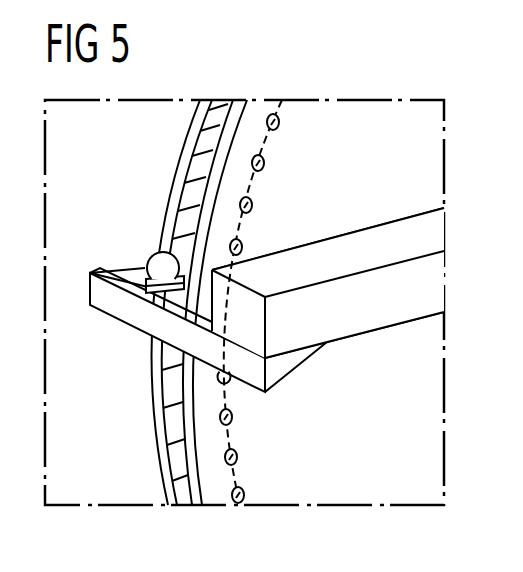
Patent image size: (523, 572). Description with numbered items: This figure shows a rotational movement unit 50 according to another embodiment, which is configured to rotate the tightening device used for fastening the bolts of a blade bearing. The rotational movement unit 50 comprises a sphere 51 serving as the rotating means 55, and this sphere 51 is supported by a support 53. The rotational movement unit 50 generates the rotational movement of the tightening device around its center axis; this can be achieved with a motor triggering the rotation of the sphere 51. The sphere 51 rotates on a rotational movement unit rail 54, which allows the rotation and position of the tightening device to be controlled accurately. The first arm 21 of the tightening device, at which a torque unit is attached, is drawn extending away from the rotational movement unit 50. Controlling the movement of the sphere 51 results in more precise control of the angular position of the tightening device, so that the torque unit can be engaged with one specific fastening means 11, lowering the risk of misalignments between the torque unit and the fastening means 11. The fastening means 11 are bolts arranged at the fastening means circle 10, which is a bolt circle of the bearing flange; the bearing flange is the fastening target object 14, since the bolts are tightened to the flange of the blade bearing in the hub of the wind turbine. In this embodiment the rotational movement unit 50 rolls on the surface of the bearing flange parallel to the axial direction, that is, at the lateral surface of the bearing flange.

The fastening means circle 10 is at (232, 475).
The fastening means 11 is at (233, 420).
The fastening target object 14 is at (315, 498).
The first arm 21 is at (348, 327).
The rotational movement unit 50 is at (192, 294).
The sphere 51 is at (121, 232).
The support 53 is at (107, 273).
The rotational movement unit rail 54 is at (207, 156).
The rotating means 55 is at (162, 256).